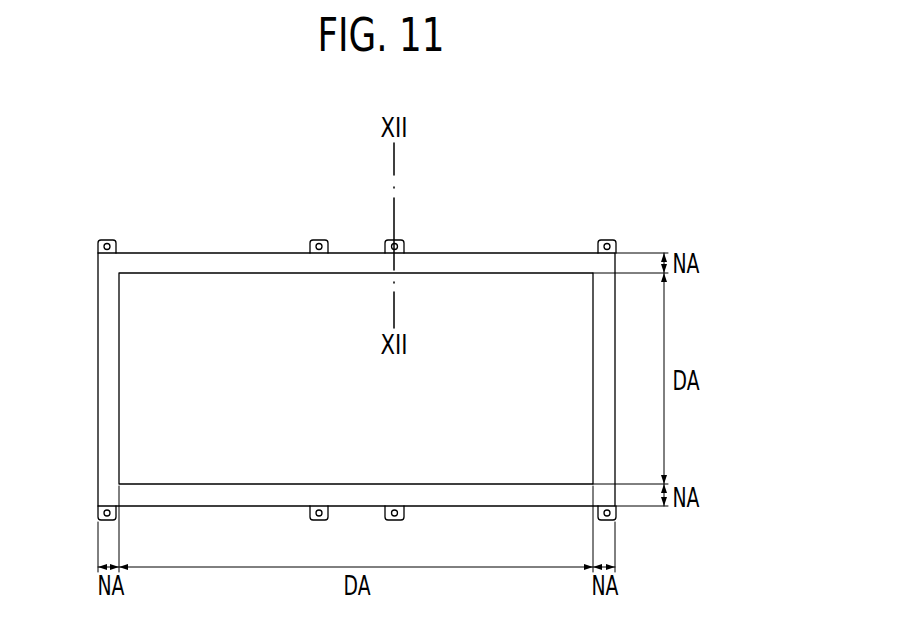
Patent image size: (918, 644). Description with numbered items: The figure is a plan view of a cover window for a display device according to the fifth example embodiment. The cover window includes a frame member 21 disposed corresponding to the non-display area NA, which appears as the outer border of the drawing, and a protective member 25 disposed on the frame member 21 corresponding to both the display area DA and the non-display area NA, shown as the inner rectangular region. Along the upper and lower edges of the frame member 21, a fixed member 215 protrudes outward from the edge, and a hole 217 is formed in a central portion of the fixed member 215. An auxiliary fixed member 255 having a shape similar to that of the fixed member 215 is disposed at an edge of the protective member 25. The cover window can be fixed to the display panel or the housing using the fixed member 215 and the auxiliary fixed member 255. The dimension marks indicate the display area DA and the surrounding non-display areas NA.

The frame member 21 is at (522, 262).
The protective member 25 is at (224, 310).
The fixed member 215 is at (357, 349).
The auxiliary fixed member 255 is at (389, 243).
The hole 217 is at (398, 244).